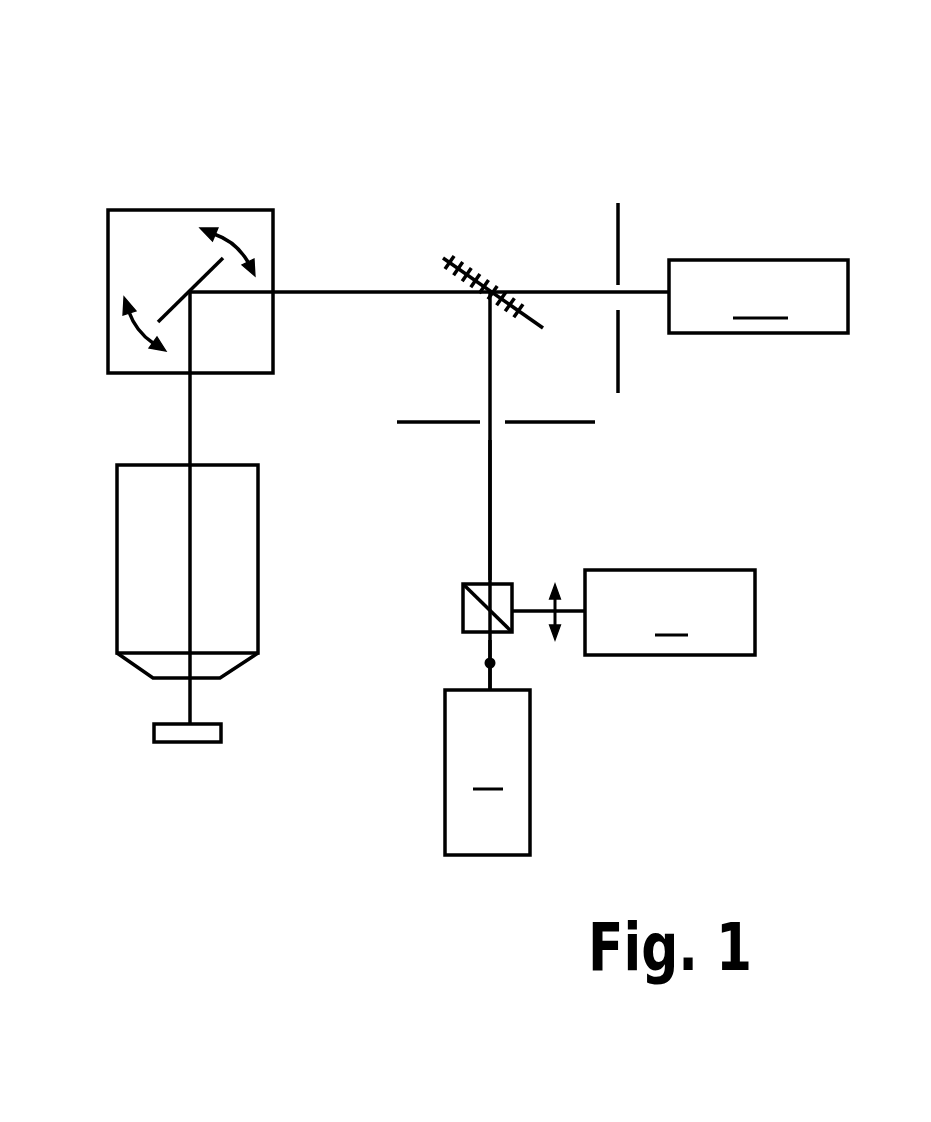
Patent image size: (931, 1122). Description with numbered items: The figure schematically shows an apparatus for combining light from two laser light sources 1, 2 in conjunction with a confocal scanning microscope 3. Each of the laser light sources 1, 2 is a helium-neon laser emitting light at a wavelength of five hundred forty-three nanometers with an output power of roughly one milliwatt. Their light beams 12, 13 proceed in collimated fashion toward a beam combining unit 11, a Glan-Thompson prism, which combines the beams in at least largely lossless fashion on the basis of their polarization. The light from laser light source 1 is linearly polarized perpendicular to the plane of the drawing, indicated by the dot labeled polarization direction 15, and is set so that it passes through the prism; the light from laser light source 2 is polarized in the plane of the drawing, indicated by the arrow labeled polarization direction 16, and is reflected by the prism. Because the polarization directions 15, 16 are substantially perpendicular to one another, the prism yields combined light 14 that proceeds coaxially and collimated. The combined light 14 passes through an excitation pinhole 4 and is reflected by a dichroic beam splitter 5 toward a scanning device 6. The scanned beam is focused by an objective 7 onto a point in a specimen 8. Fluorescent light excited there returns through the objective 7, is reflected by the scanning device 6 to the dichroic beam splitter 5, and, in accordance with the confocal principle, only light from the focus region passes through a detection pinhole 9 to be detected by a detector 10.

The laser light source 1 is at (487, 772).
The laser light source 2 is at (670, 612).
The confocal scanning microscope 3 is at (335, 180).
The excitation pinhole 4 is at (595, 422).
The dichroic beam splitter 5 is at (477, 262).
The scanning device 6 is at (153, 237).
The objective 7 is at (160, 528).
The specimen 8 is at (153, 733).
The detection pinhole 9 is at (618, 227).
The detector 10 is at (758, 296).
The beam combining unit 11 is at (475, 611).
The light beam 12 is at (490, 650).
The light beam 13 is at (555, 637).
The combined light 14 is at (488, 522).
The polarization direction 15 is at (497, 663).
The polarization direction 16 is at (555, 585).